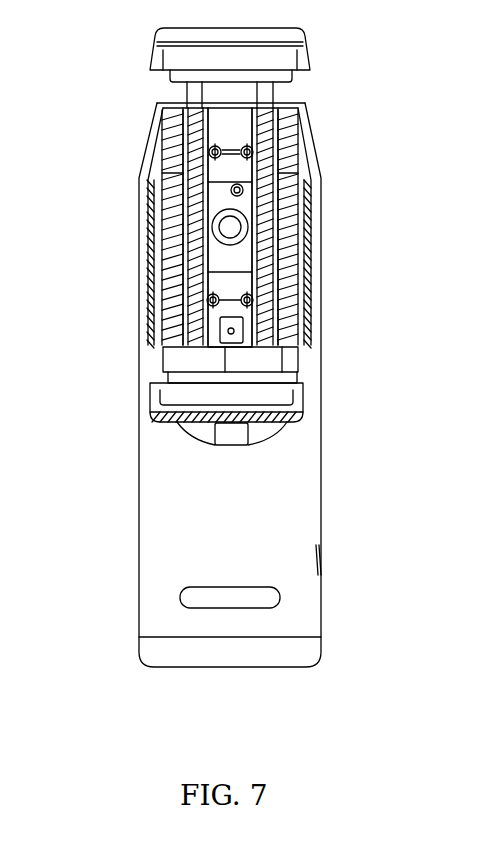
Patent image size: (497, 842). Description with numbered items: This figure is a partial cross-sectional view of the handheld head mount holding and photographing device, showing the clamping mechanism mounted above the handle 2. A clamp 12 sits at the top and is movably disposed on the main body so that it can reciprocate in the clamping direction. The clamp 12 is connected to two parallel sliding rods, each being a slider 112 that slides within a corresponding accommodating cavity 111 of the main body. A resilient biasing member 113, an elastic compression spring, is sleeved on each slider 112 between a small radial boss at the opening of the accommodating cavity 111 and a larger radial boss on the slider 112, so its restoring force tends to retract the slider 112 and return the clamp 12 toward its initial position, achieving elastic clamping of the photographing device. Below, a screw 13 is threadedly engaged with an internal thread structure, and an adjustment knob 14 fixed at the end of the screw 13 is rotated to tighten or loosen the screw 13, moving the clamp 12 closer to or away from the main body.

The handle 2 is at (217, 496).
The clamp 12 is at (303, 50).
The screw 13 is at (230, 362).
The adjustment knob 14 is at (240, 442).
The accommodating cavity 111 is at (197, 298).
The slider 112 is at (267, 92).
The resilient biasing member 113 is at (197, 130).